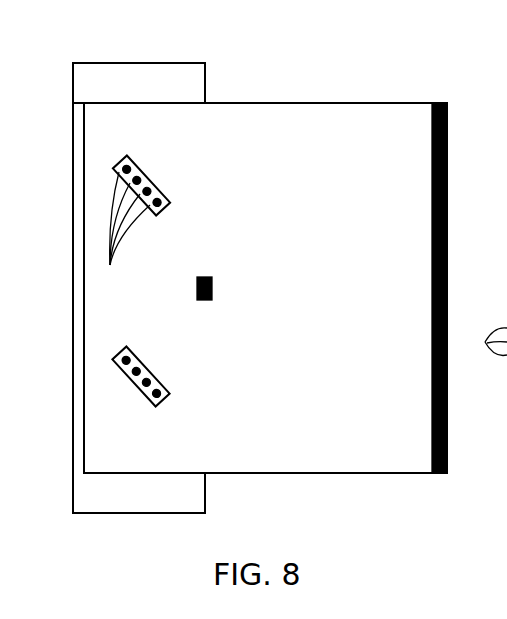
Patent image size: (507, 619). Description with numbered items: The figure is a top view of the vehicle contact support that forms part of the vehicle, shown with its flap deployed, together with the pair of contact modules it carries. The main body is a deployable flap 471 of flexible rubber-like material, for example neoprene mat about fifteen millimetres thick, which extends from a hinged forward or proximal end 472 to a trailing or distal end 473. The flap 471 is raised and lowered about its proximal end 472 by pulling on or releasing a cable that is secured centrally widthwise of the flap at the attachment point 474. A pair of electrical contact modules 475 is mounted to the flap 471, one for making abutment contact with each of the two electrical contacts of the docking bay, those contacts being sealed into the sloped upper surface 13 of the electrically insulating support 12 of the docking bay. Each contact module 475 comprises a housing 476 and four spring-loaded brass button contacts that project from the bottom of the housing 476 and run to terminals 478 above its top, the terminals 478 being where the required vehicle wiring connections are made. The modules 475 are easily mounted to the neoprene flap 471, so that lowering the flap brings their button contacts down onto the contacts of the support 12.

The support 12 is at (205, 80).
The sloped upper surface 13 is at (145, 78).
The deployable flap 471 is at (337, 123).
The proximal end 472 is at (448, 147).
The distal end 473 is at (84, 229).
The cable attachment point 474 is at (212, 283).
The electrical contact modules 475 is at (168, 180).
The housing 476 is at (493, 314).
The terminals 478 is at (121, 232).